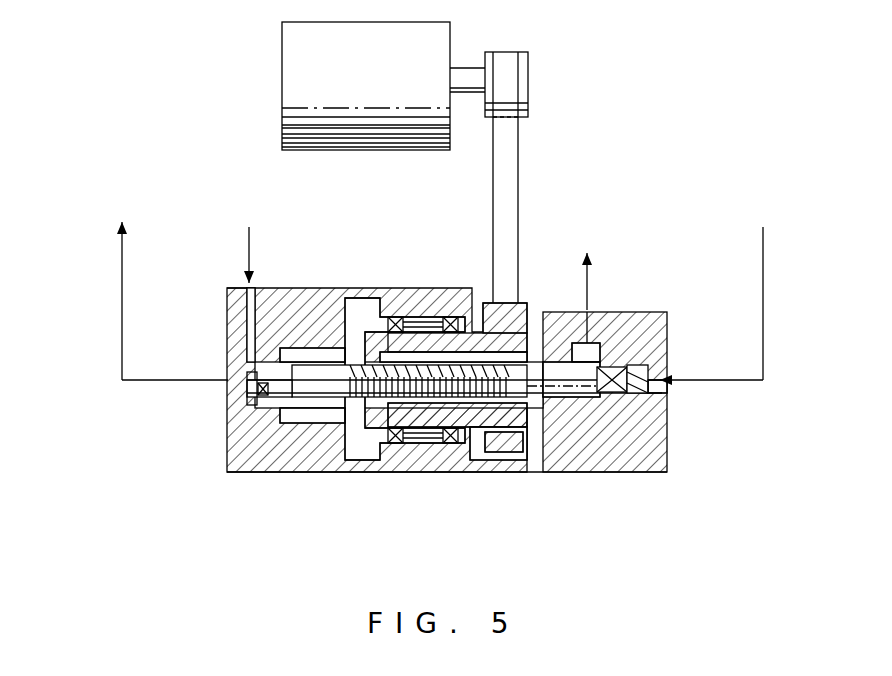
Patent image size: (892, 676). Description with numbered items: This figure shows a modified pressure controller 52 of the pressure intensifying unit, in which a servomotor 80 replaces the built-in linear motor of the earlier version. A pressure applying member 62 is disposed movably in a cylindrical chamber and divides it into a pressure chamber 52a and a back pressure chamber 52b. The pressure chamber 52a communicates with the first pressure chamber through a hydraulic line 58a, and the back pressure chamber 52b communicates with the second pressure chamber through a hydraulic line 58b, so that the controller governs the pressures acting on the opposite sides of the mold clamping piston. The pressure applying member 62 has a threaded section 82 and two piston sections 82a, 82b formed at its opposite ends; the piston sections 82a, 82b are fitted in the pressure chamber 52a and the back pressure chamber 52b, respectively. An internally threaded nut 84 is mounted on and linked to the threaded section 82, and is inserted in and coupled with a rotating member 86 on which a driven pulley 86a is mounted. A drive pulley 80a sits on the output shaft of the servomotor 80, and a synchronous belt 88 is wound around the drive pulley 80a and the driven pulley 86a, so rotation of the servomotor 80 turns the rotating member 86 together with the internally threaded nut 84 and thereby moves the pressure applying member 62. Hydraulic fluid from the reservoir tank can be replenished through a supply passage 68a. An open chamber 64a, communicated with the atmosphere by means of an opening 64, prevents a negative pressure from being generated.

The pressure controller 52 is at (618, 190).
The pressure chamber 52a is at (253, 395).
The back pressure chamber 52b is at (640, 400).
The hydraulic line 58a is at (122, 305).
The hydraulic line 58b is at (765, 277).
The pressure applying member 62 is at (302, 403).
The opening 64 is at (590, 320).
The open chamber 64a is at (592, 400).
The supply passage 68a is at (228, 300).
The servomotor 80 is at (290, 82).
The drive pulley 80a is at (525, 64).
The threaded section 82 is at (543, 312).
The piston section 82a is at (285, 397).
The piston section 82b is at (605, 403).
The internally threaded nut 84 is at (368, 338).
The rotating member 86 is at (423, 335).
The driven pulley 86a is at (533, 310).
The synchronous belt 88 is at (505, 150).